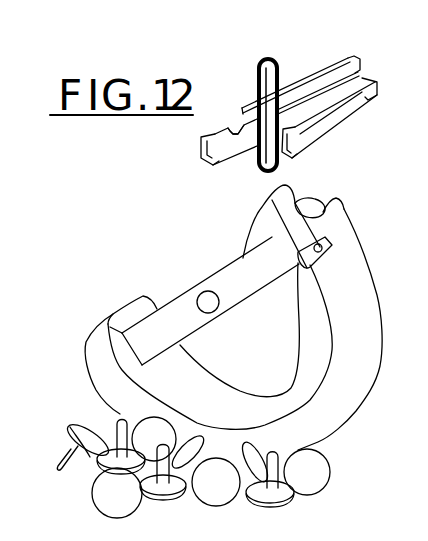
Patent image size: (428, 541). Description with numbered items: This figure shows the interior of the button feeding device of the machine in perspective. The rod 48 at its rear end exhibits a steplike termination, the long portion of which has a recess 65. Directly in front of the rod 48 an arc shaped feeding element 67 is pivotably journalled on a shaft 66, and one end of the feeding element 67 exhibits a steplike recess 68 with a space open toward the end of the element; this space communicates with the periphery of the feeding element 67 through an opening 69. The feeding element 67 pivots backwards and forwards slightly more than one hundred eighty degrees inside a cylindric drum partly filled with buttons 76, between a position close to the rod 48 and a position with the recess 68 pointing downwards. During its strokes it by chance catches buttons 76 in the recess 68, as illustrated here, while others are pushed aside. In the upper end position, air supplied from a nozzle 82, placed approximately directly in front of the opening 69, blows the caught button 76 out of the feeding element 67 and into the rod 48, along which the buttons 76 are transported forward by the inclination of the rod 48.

The rod 48 is at (323, 75).
The recess 65 is at (243, 108).
The nozzle 82 is at (262, 176).
The steplike recess 68 is at (274, 190).
The opening 69 is at (316, 247).
The shaft 66 is at (204, 300).
The feeding element 67 is at (103, 353).
The buttons 76 is at (85, 437).